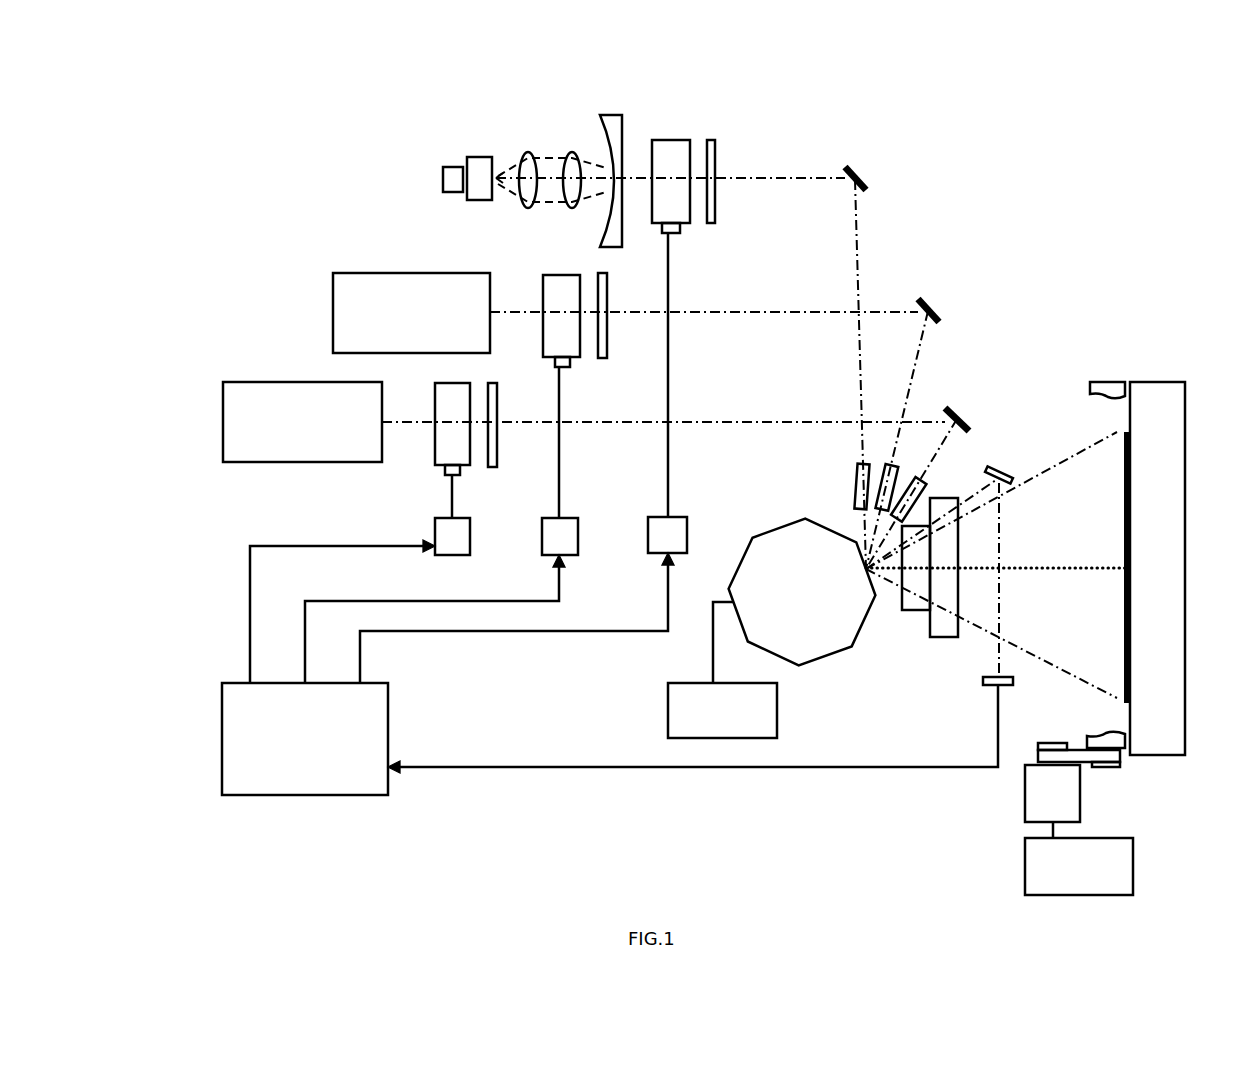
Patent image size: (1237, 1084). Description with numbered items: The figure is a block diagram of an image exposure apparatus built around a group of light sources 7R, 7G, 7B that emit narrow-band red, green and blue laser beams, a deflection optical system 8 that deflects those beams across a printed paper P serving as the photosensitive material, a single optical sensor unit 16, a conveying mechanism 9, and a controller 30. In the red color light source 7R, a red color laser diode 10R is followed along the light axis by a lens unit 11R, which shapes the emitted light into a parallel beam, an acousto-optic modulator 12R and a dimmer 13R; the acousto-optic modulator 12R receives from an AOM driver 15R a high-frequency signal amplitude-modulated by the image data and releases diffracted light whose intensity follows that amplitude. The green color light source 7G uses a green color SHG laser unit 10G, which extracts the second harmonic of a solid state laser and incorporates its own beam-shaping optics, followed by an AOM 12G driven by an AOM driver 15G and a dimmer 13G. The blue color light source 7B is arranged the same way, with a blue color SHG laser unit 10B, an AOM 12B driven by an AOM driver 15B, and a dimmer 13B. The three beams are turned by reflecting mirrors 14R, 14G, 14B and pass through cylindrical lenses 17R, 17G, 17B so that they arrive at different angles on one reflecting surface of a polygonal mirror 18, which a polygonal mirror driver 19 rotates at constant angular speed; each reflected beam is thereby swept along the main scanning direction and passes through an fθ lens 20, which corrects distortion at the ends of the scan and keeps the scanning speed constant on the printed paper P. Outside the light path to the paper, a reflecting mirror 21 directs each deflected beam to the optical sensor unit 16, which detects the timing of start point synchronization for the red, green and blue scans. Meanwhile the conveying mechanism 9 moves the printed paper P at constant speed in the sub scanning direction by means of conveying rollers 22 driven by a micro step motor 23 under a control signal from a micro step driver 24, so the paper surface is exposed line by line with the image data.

The red color light source 7R is at (424, 160).
The green color light source 7G is at (292, 300).
The blue color light source 7B is at (287, 492).
The red color laser diode 10R is at (452, 165).
The green color SHG laser unit 10G is at (333, 297).
The blue color SHG laser unit 10B is at (223, 405).
The lens unit 11R is at (632, 105).
The acousto-optic modulator 12R is at (670, 140).
The acousto-optic modulator 12G is at (543, 297).
The acousto-optic modulator 12B is at (435, 403).
The dimmer 13R is at (711, 140).
The dimmer 13G is at (607, 293).
The dimmer 13B is at (497, 407).
The reflecting mirror 14R is at (858, 166).
The reflecting mirror 14G is at (930, 298).
The reflecting mirror 14B is at (950, 407).
The AOM driver 15R is at (648, 520).
The AOM driver 15G is at (542, 522).
The AOM driver 15B is at (435, 522).
The optical sensor unit 16 is at (993, 685).
The cylindrical lens 17R is at (855, 469).
The cylindrical lens 17G is at (884, 464).
The cylindrical lens 17B is at (922, 478).
The polygonal mirror 18 is at (790, 518).
The polygonal mirror driver 19 is at (667, 702).
The fθ lens 20 is at (945, 640).
The reflecting mirror 21 is at (993, 462).
The conveying rollers 22 is at (1150, 747).
The micro step motor 23 is at (1032, 782).
The micro step driver 24 is at (1030, 853).
The controller 30 is at (388, 697).
The deflection optical system 8 is at (876, 677).
The conveying mechanism 9 is at (1187, 835).
The printed paper P is at (1123, 480).